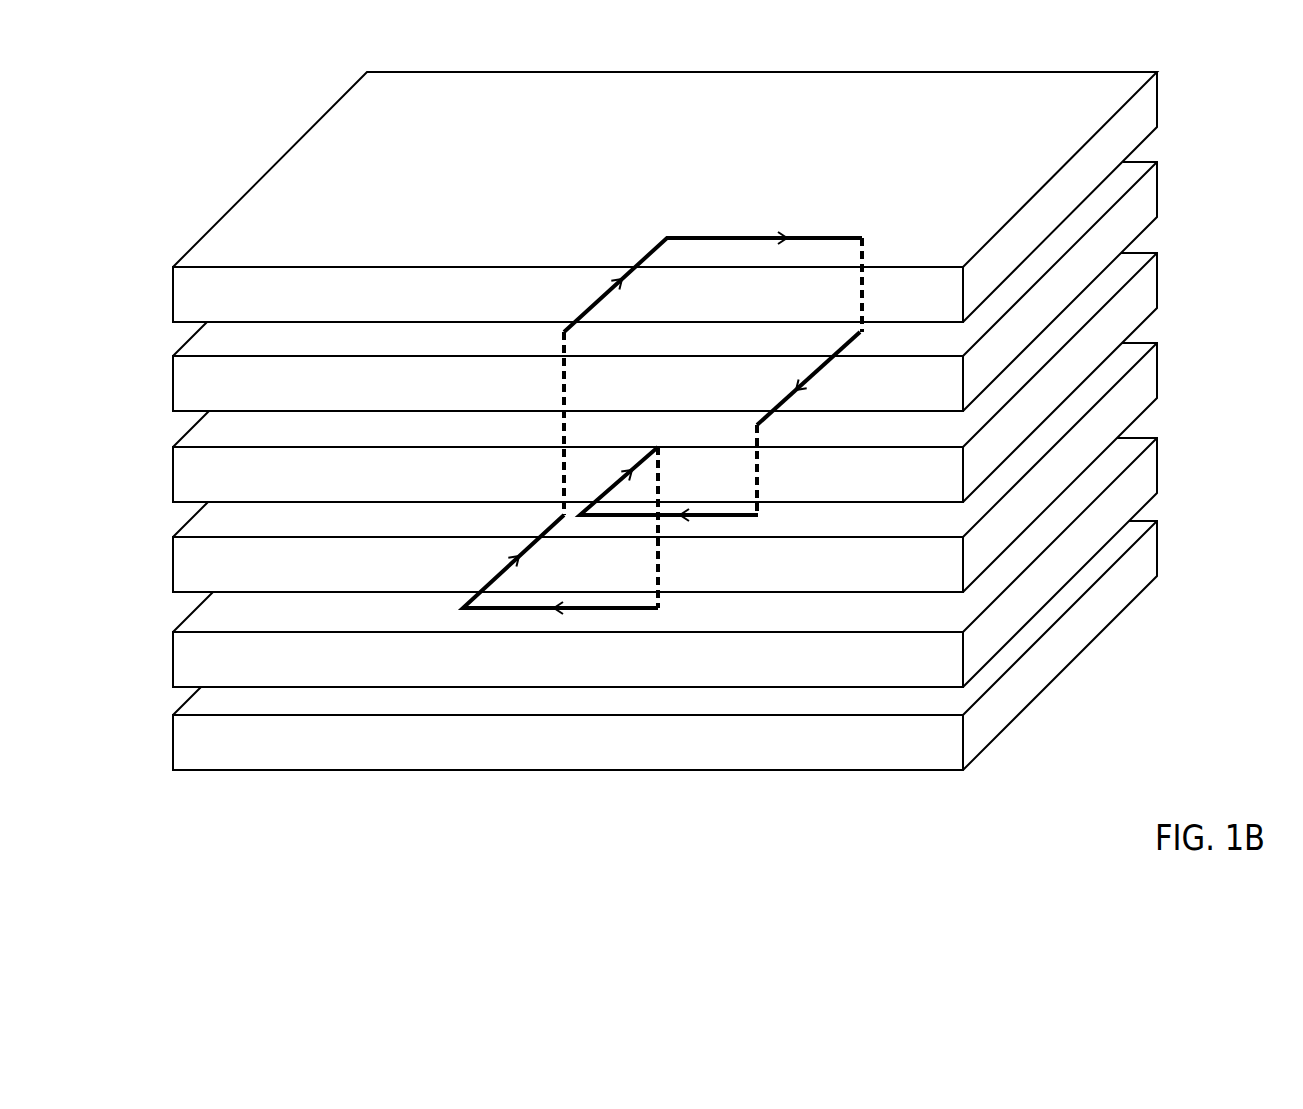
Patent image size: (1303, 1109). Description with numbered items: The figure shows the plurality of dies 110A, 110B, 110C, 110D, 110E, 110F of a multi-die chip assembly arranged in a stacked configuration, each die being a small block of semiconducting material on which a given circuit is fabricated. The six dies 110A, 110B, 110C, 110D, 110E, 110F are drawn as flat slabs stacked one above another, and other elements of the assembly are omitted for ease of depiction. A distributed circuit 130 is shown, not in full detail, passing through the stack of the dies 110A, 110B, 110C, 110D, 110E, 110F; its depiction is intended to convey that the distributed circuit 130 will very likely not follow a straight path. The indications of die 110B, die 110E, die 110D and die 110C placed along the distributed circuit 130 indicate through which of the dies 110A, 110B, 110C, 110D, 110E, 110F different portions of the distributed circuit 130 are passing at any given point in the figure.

The die 110A is at (173, 743).
The die 110B is at (173, 655).
The die 110C is at (173, 570).
The die 110D is at (173, 473).
The die 110E is at (173, 390).
The die 110F is at (173, 298).
The distributed circuit 130 is at (563, 476).